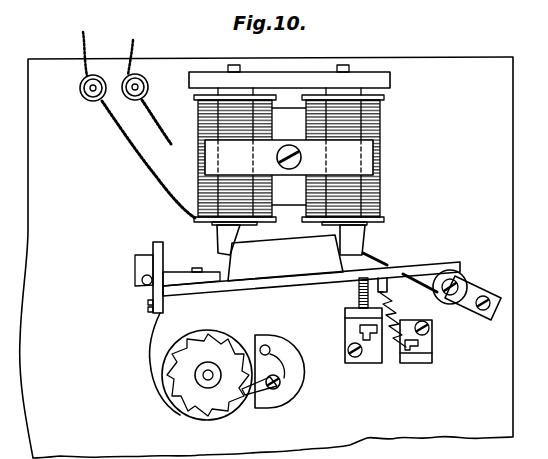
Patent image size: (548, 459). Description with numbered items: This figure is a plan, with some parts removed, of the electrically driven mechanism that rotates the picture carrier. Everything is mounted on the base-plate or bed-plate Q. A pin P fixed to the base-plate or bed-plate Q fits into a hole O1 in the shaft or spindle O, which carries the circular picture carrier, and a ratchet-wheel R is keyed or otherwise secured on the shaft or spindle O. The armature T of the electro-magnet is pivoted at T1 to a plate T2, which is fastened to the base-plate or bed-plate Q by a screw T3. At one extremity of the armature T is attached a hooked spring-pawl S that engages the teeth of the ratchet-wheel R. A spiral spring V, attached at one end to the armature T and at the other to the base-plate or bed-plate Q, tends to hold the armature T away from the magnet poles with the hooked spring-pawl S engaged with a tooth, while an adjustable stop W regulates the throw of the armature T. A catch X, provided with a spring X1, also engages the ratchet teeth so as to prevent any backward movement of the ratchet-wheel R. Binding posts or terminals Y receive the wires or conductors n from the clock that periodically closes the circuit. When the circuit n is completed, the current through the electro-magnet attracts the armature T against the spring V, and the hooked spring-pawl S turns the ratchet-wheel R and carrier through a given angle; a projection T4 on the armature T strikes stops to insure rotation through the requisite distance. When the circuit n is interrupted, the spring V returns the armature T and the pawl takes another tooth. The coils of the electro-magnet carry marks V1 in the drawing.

The wires or conductors n is at (139, 125).
The binding posts or terminals Y is at (80, 88).
The spiral spring V is at (301, 221).
The hangers of the electromagnet frame V1 is at (291, 240).
The armature T is at (260, 282).
The pivot T1 is at (435, 289).
The plate T2 is at (400, 238).
The screw T3 is at (473, 296).
The projection T4 is at (146, 277).
The adjustable stop W is at (358, 292).
The hooked spring-pawl S is at (152, 354).
The shaft or spindle O is at (206, 386).
The hole O1 is at (196, 374).
The pin P is at (211, 369).
The ratchet-wheel R is at (250, 389).
The catch X is at (273, 390).
The spring X1 is at (277, 356).
The base-plate or bed-plate Q is at (386, 361).